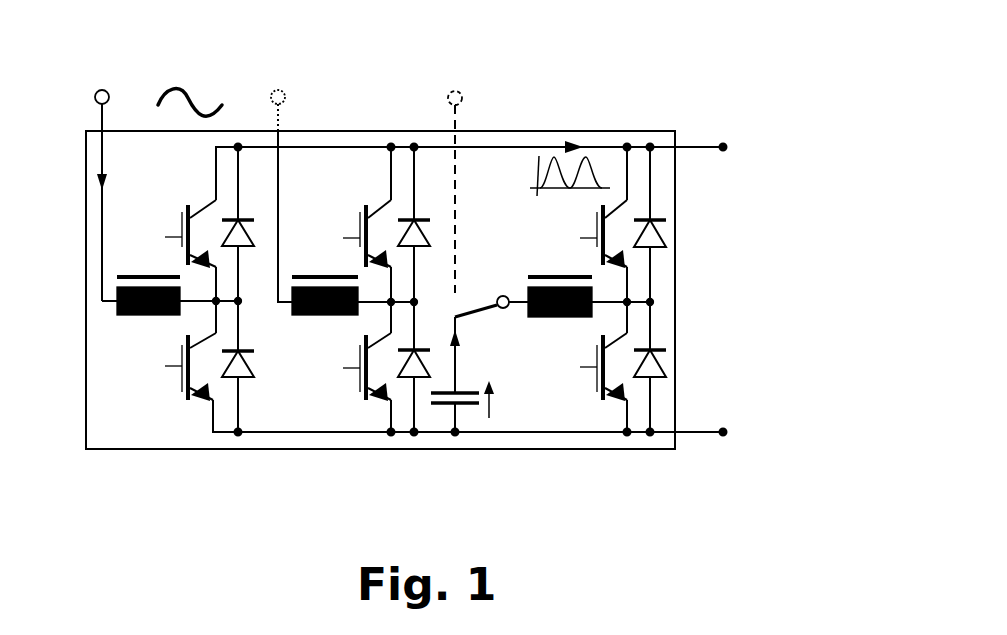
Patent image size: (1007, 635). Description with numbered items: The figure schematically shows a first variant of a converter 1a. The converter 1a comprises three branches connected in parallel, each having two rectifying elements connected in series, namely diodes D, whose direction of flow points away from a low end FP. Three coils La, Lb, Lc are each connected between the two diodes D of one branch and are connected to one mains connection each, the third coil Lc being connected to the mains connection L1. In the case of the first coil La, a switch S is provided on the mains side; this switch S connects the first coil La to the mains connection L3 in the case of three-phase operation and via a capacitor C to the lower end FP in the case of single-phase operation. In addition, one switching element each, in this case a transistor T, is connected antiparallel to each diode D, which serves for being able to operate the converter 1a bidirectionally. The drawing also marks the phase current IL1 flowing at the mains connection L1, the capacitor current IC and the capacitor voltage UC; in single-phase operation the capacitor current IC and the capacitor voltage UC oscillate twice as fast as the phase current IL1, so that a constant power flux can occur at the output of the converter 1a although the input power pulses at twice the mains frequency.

The converter 1a is at (748, 42).
The mains connection L1 is at (101, 174).
The mains connection L3 is at (454, 170).
The phase current IL1 is at (119, 180).
The coil Lc is at (172, 316).
The coil Lb is at (355, 316).
The first coil La is at (591, 317).
The transistor T is at (178, 370).
The diode D is at (252, 391).
The switch S is at (491, 295).
The capacitor current IC is at (467, 349).
The capacitor C is at (431, 444).
The capacitor voltage UC is at (508, 400).
The low end FP is at (586, 485).